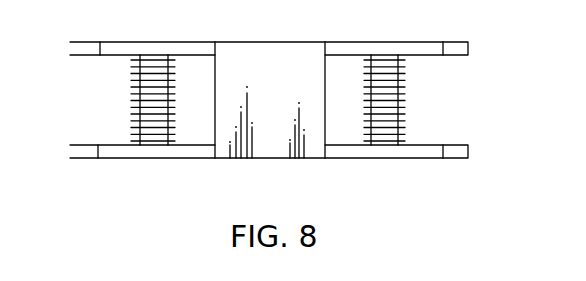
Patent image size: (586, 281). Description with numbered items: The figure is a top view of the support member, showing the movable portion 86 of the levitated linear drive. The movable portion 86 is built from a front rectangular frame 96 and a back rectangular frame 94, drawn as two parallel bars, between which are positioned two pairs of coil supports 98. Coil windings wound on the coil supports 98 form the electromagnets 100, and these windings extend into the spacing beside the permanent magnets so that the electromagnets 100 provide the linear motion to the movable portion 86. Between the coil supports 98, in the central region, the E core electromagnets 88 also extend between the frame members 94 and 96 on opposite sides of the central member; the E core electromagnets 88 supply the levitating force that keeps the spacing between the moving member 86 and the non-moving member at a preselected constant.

The movable portion 86 is at (278, 92).
The E core electromagnets 88 is at (272, 42).
The back rectangular frame 94 is at (90, 50).
The front rectangular frame 96 is at (89, 153).
The coil supports 98 is at (147, 90).
The electromagnets 100 is at (132, 117).